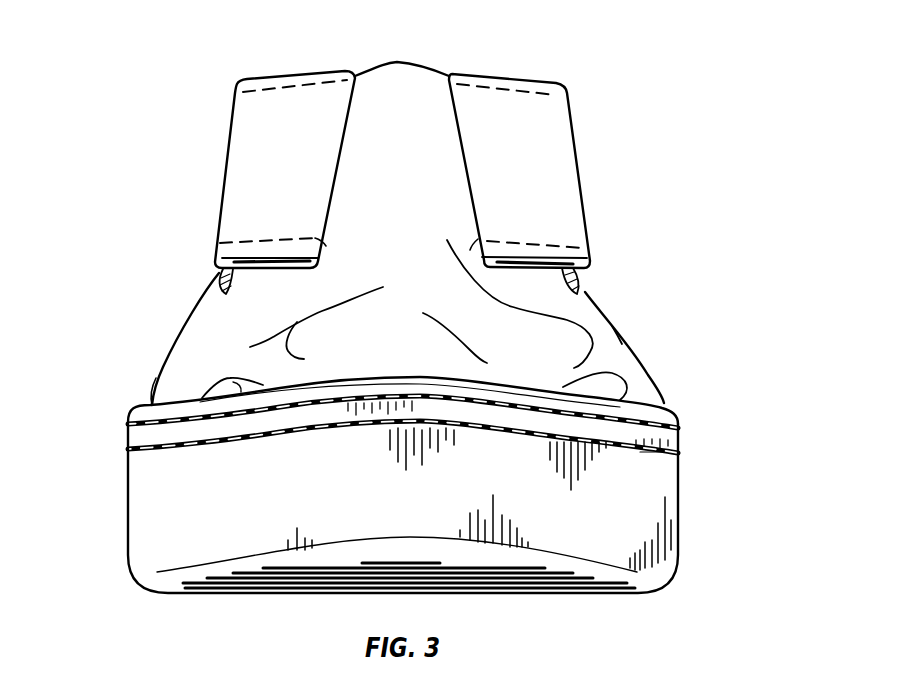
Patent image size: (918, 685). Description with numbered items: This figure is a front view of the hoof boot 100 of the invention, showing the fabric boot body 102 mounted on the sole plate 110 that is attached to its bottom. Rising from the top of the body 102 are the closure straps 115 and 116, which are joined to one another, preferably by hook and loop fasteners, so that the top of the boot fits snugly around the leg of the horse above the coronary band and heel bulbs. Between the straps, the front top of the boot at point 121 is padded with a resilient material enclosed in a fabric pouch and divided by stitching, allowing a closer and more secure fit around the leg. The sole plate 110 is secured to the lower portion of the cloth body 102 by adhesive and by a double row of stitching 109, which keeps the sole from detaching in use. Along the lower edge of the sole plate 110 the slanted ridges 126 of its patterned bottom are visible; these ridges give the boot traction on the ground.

The carrying bag 100 is at (125, 95).
The bag body 102 is at (736, 396).
The double row of stitching 109 is at (128, 424).
The sole plate 110 is at (333, 472).
The closure strap 115 is at (228, 163).
The closure strap 116 is at (212, 280).
The front padding 121 is at (392, 62).
The slanted ridges 126 is at (530, 582).